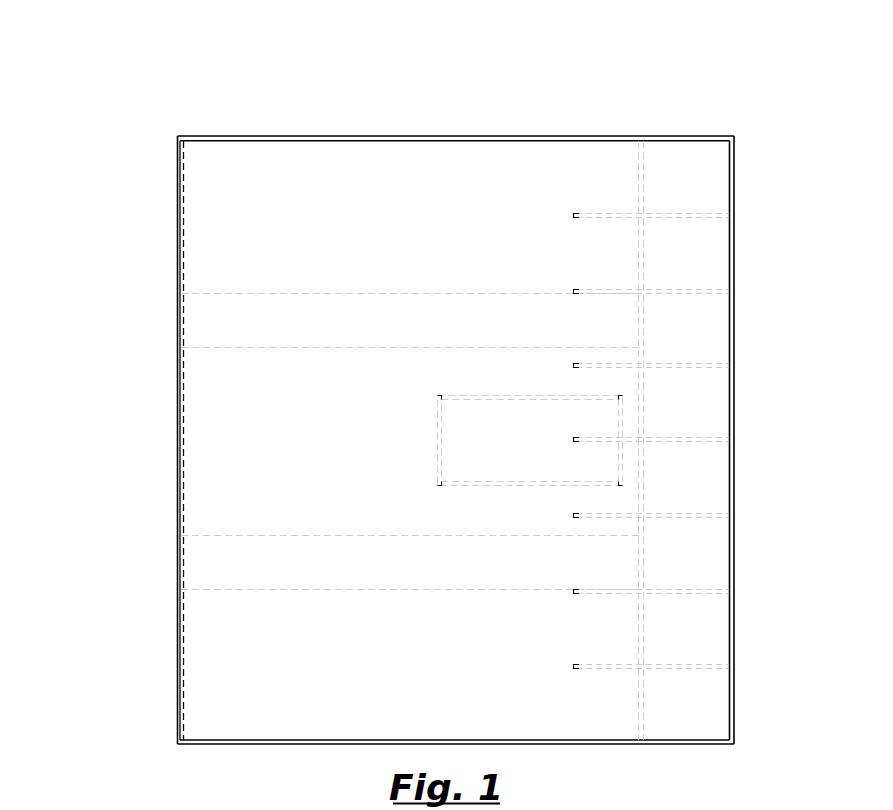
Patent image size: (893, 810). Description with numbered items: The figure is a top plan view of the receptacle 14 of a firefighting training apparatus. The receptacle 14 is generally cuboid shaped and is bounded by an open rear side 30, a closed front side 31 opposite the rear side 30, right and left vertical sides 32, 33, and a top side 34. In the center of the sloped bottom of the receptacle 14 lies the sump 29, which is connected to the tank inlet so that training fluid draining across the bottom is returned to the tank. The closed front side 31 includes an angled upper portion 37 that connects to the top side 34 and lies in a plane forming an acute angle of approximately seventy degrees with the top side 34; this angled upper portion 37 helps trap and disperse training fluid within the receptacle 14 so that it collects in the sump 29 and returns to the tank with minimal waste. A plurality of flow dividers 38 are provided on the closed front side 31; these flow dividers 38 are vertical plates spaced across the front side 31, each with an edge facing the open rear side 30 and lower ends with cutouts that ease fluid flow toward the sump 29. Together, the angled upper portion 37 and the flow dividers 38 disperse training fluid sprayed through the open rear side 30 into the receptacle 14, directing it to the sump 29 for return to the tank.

The receptacle 14 is at (177, 282).
The sump 29 is at (463, 442).
The open rear side 30 is at (177, 655).
The closed front side 31 is at (737, 331).
The right vertical side 32 is at (257, 744).
The left vertical side 33 is at (345, 137).
The top side 34 is at (228, 200).
The angled upper portion 37 is at (717, 473).
The flow dividers 38 is at (690, 592).